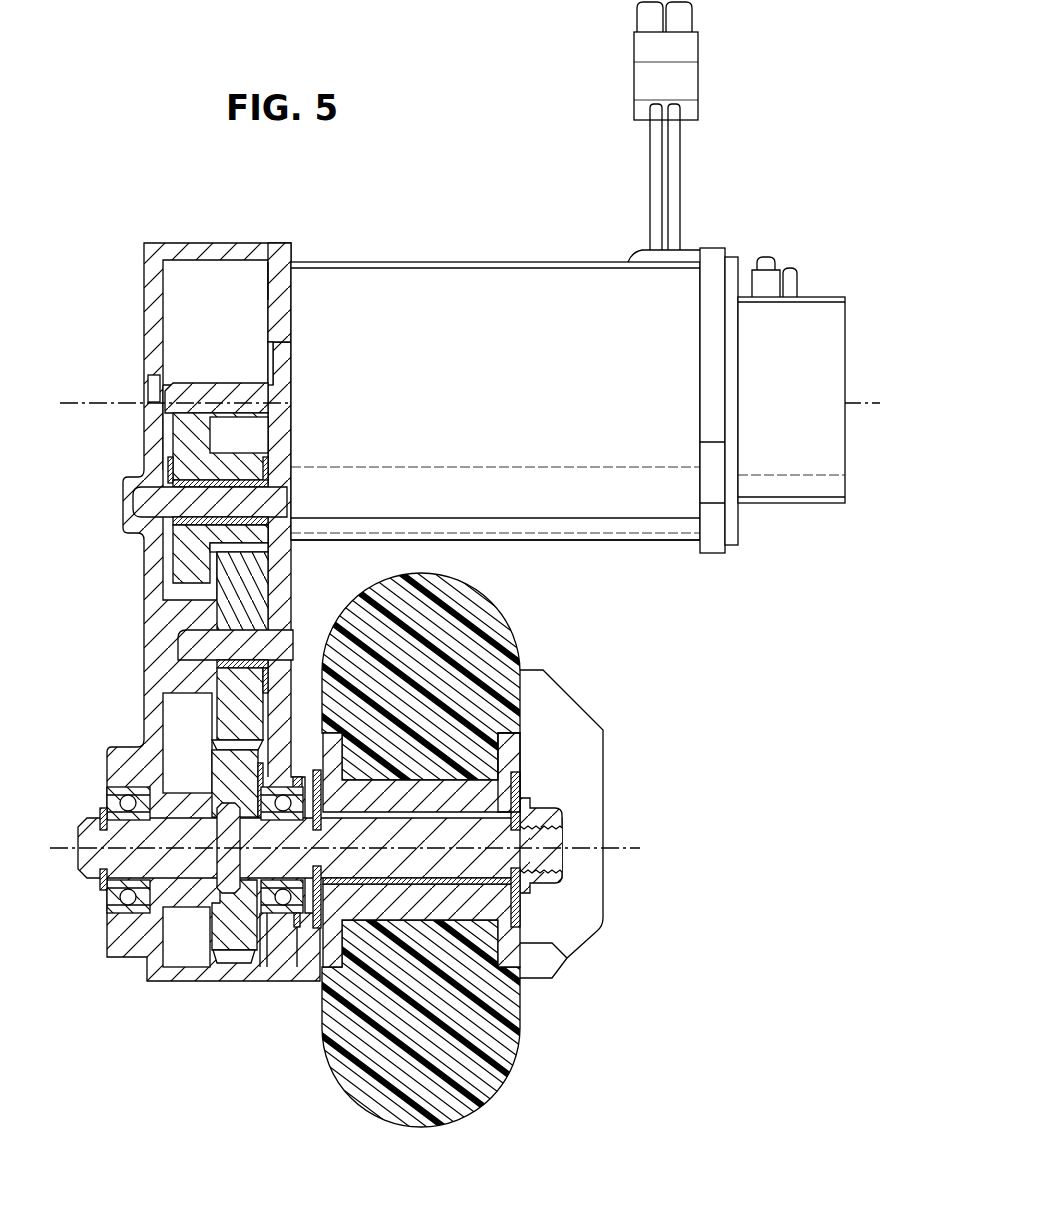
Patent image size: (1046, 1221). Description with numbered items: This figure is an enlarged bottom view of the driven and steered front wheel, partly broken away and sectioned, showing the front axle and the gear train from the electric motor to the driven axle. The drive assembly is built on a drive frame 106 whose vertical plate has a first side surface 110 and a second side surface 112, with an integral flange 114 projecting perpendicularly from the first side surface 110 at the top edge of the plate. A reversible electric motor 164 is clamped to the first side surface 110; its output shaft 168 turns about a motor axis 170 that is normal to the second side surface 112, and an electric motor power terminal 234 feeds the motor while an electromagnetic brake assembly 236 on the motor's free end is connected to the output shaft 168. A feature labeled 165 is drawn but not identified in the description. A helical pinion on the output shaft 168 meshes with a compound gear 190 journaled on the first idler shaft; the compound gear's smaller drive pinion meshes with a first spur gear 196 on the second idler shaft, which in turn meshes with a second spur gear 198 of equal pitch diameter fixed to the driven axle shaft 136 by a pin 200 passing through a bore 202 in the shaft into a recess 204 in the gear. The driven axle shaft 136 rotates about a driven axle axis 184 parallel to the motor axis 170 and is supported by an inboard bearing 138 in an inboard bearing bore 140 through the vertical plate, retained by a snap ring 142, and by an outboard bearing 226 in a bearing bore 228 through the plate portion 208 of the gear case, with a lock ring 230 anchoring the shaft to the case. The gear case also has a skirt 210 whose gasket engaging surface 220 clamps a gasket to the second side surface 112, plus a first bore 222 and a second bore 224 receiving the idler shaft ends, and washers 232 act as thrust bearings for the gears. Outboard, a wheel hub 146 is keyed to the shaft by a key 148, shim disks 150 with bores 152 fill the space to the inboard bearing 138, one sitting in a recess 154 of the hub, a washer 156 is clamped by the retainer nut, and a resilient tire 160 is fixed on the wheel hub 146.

The drive frame 106 is at (283, 245).
The first side surface 110 is at (308, 573).
The second side surface 112 is at (265, 285).
The integral flange 114 is at (556, 688).
The driven axle shaft 136 is at (500, 850).
The inboard bearing 138 is at (263, 918).
The inboard bearing bore 140 is at (269, 922).
The snap ring 142 is at (297, 922).
The wheel hub 146 is at (520, 755).
The key 148 is at (565, 847).
The disks 150 is at (343, 872).
The bores 152 is at (220, 833).
The recess 154 is at (328, 780).
The washer 156 is at (520, 787).
The tire 160 is at (516, 1072).
The reversible electric motor 164 is at (448, 262).
The shoulder 165 is at (270, 353).
The motor output shaft 168 is at (147, 397).
The motor axis 170 is at (857, 402).
The driven axle axis 184 is at (627, 853).
The compound gear 190 is at (170, 437).
The first spur gear 196 is at (218, 703).
The second spur gear 198 is at (210, 756).
The pin 200 is at (215, 882).
The bore 202 is at (228, 893).
The recess 204 is at (214, 884).
The plate portion 208 is at (137, 645).
The skirt 210 is at (195, 243).
The gasket engaging surface 220 is at (275, 247).
The first bore 222 is at (143, 499).
The second bore 224 is at (180, 650).
The outboard bearing 226 is at (108, 912).
The bearing bore 228 is at (117, 790).
The lock ring 230 is at (106, 812).
The washers 232 is at (210, 613).
The electric motor power terminal 234 is at (634, 50).
The electromagnetic brake assembly 236 is at (817, 507).